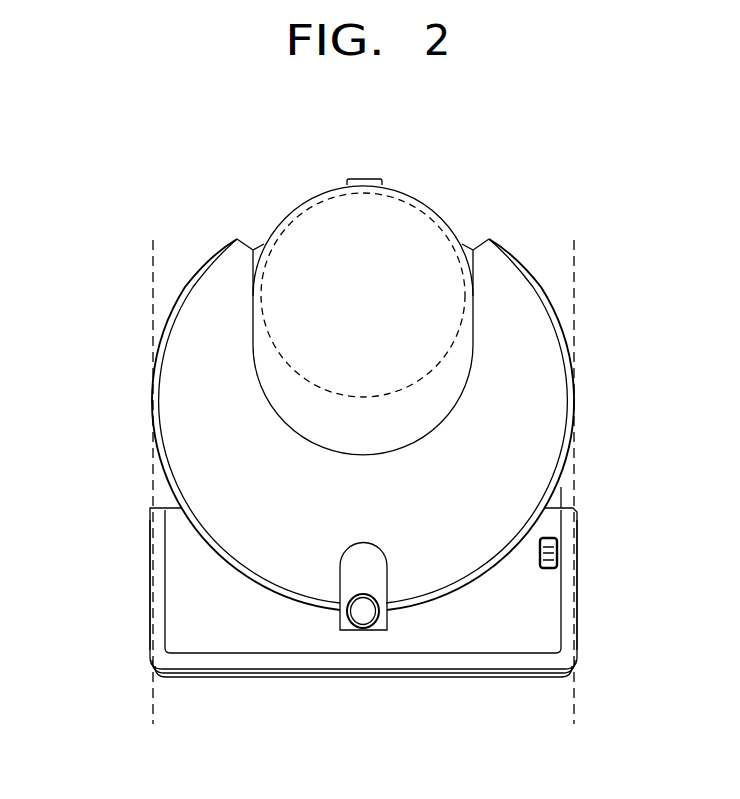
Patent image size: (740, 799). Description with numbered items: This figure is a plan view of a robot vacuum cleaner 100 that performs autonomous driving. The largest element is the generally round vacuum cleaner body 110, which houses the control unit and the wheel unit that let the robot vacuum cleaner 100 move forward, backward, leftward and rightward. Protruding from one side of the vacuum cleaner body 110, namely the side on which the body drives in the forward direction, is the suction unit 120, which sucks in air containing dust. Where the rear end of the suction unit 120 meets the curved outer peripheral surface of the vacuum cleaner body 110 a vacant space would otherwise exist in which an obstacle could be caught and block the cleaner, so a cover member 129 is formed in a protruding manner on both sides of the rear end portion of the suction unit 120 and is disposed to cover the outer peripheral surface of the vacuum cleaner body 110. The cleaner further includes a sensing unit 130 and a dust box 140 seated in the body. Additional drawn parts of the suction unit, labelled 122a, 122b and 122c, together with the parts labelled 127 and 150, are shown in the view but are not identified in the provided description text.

The robot vacuum cleaner 100 is at (169, 167).
The vacuum cleaner body 110 is at (540, 398).
The suction unit 120 is at (518, 618).
The bottom plate 122a is at (470, 680).
The right side wall 122b is at (578, 580).
The left side wall 122c is at (150, 584).
The switch 127 is at (553, 542).
The cover member 129 is at (553, 502).
The sensing unit 130 is at (353, 578).
The dust box 140 is at (428, 215).
The dust container 150 is at (312, 198).